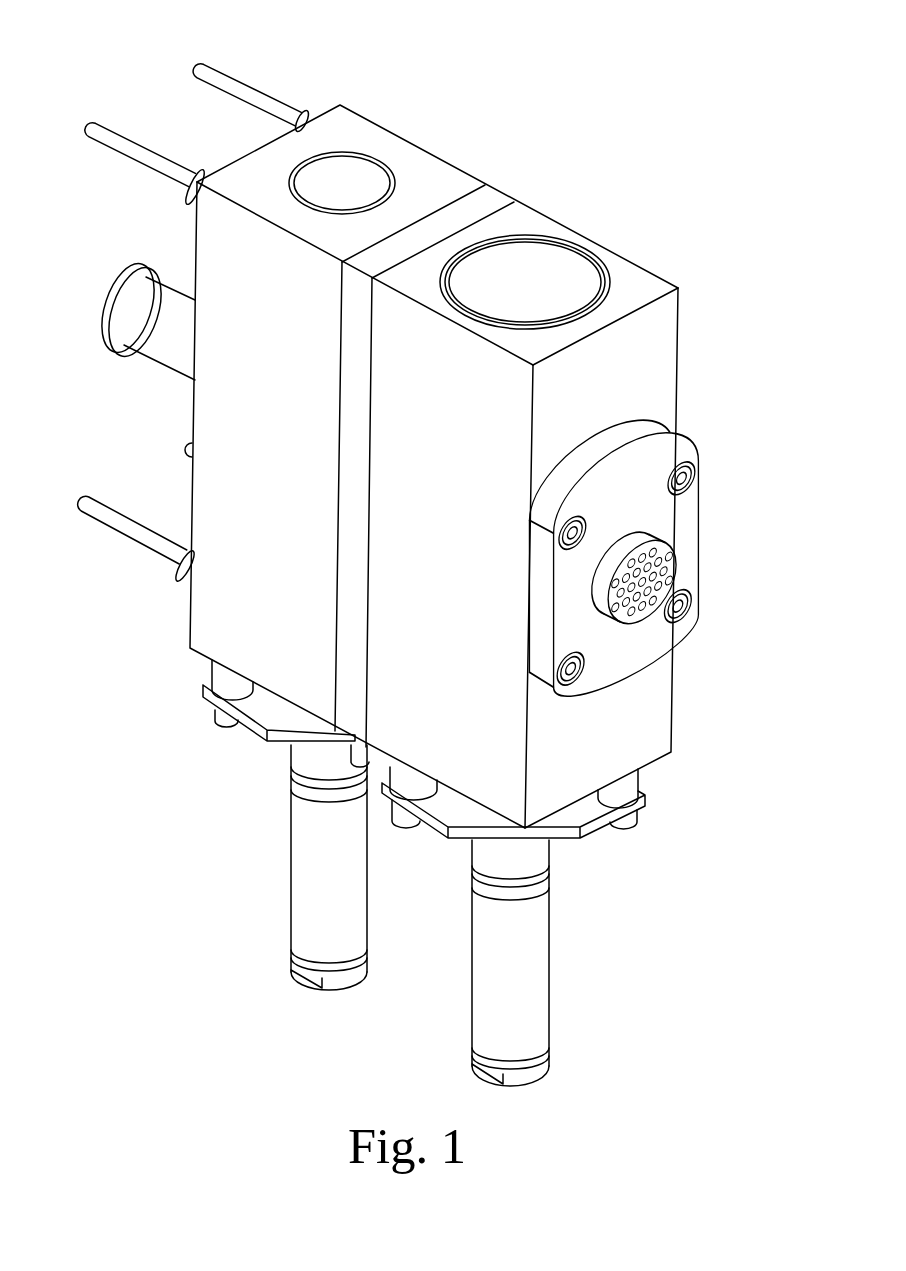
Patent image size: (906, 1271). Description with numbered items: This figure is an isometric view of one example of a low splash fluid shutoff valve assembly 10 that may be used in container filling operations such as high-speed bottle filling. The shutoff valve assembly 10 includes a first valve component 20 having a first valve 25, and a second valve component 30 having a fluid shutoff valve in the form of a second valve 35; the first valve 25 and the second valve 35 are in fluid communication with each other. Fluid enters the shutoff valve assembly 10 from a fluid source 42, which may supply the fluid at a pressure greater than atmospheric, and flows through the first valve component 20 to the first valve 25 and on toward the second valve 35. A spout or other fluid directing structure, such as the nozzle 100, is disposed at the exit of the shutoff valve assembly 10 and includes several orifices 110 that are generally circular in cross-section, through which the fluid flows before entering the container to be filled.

The low splash fluid shutoff valve assembly 10 is at (219, 754).
The first valve component 20 is at (353, 127).
The first valve 25 is at (312, 188).
The second valve component 30 is at (530, 223).
The second valve 35 is at (567, 263).
The fluid source 42 is at (167, 322).
The nozzle 100 is at (638, 538).
The orifices 110 is at (643, 617).